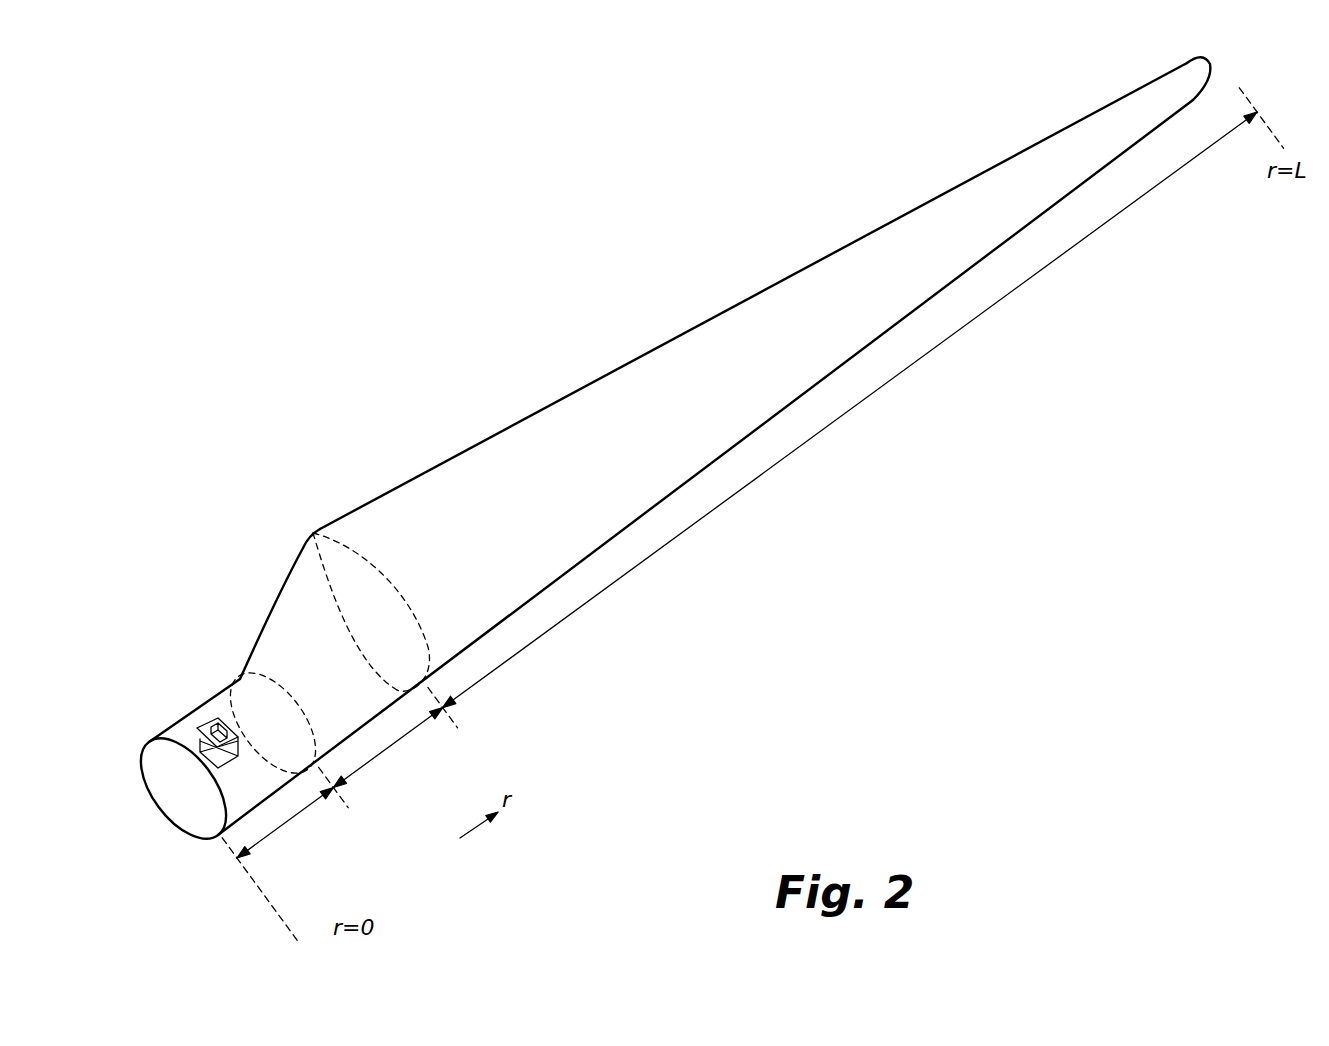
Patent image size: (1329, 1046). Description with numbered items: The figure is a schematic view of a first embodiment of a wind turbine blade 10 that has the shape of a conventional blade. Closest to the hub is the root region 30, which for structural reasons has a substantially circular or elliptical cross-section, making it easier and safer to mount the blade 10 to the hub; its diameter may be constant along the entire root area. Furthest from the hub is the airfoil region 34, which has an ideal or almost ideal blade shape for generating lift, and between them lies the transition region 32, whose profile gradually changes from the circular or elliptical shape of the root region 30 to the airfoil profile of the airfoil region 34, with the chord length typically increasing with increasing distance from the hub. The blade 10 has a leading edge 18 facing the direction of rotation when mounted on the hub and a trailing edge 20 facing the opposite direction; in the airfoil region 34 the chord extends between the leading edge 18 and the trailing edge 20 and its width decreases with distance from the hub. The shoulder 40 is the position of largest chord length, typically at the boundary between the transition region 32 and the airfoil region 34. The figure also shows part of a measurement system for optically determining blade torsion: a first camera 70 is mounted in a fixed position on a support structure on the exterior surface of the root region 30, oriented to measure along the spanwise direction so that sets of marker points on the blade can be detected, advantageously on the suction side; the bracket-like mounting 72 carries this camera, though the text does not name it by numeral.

The wind turbine blade 10 is at (667, 455).
The leading edge 18 is at (887, 332).
The trailing edge 20 is at (893, 217).
The root region 30 is at (287, 820).
The transition region 32 is at (393, 743).
The airfoil region 34 is at (772, 470).
The shoulder 40 is at (313, 533).
The first camera 70 is at (209, 717).
The sensor mounting bracket 72 is at (196, 740).